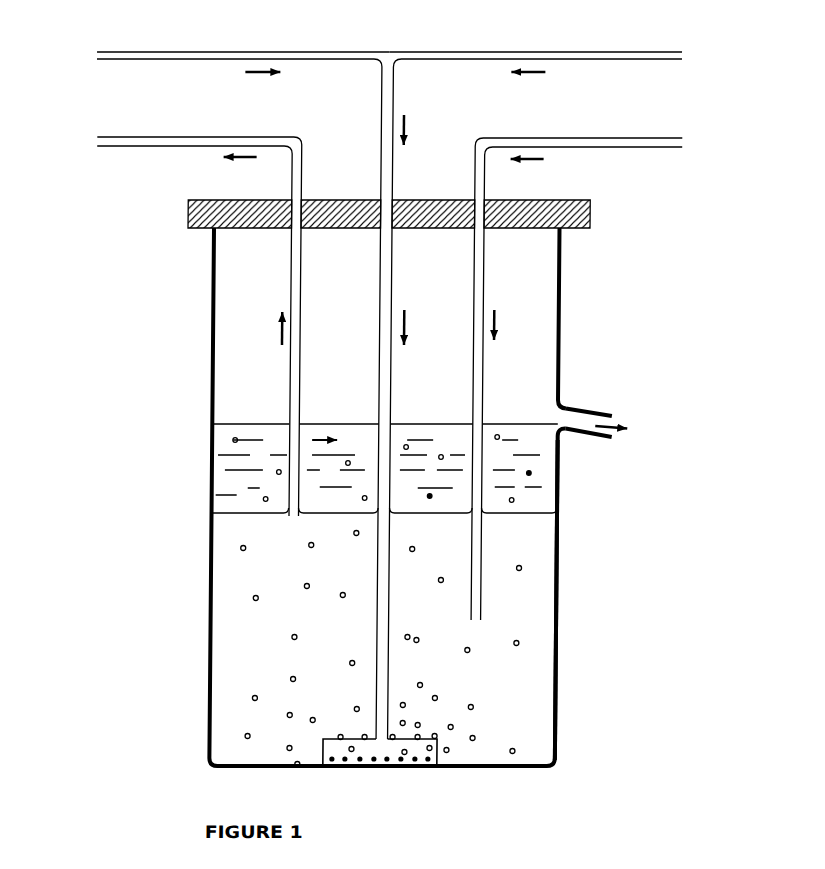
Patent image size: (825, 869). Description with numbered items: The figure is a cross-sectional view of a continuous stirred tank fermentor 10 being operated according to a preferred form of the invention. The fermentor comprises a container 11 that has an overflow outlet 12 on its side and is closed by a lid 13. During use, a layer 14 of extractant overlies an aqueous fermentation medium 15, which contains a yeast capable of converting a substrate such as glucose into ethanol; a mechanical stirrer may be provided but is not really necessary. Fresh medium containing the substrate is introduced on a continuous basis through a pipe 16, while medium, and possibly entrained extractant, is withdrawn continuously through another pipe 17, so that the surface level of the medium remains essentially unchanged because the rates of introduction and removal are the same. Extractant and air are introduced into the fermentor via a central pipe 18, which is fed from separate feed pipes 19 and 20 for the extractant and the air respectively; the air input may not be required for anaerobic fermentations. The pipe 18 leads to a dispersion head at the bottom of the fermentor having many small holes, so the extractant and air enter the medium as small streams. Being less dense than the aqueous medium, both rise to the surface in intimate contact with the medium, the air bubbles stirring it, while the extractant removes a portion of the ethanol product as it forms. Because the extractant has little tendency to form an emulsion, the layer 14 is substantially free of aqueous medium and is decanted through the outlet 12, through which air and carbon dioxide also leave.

The continuous stirred tank fermentor 10 is at (191, 367).
The container 11 is at (563, 642).
The overflow outlet 12 is at (614, 415).
The lid 13 is at (592, 215).
The layer of extractant 14 is at (241, 492).
The aqueous fermentation medium 15 is at (536, 715).
The pipe 16 is at (663, 147).
The pipe 17 is at (111, 148).
The extractant/air pipe 18 is at (382, 283).
The feed pipe 19 is at (110, 50).
The feed pipe 20 is at (662, 59).